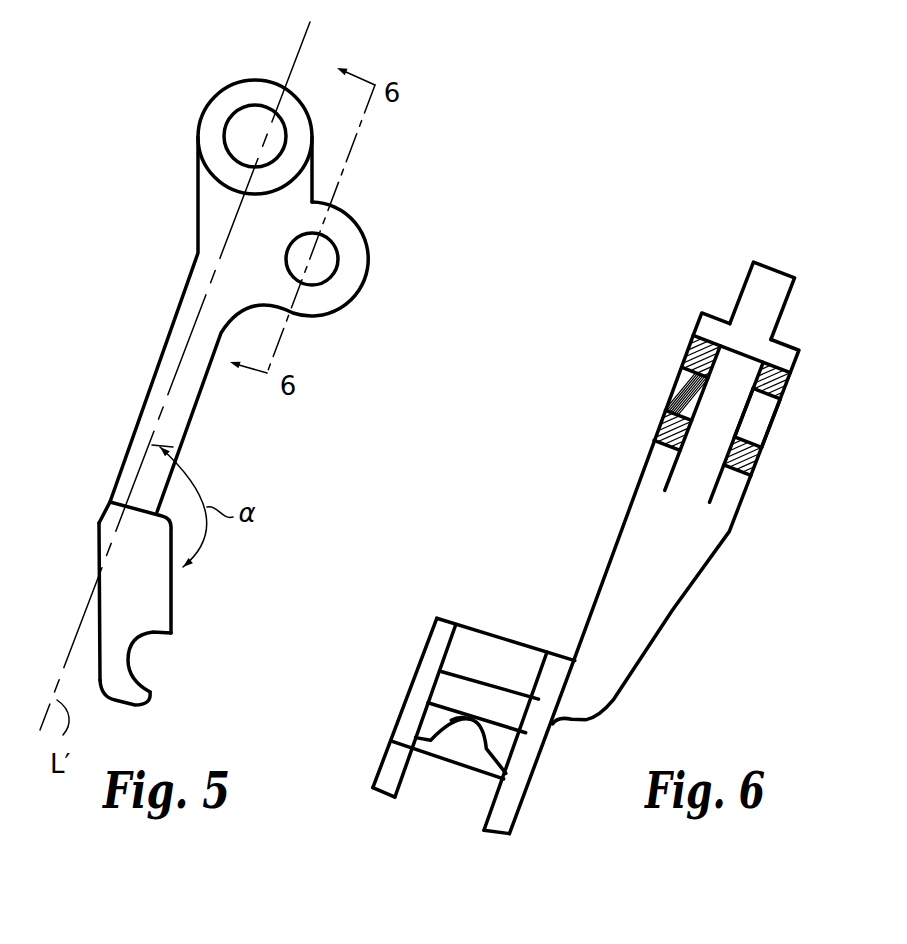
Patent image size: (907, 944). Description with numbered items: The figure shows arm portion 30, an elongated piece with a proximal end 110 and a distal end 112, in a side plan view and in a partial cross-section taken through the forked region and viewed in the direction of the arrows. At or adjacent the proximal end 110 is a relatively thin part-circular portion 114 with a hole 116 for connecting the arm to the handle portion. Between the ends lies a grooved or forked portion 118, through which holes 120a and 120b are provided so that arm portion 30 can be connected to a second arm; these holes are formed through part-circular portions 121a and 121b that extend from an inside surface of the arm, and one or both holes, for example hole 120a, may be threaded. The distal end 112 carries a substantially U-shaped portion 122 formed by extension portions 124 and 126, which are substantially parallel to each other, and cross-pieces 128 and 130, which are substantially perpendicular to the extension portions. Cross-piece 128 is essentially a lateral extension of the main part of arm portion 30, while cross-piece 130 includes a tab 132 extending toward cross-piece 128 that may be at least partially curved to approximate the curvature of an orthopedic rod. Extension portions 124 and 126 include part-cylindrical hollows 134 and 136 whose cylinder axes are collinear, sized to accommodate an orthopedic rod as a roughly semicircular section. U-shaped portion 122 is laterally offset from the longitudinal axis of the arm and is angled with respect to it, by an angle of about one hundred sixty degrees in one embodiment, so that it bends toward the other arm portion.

In FIG. 5, the arm portion 30 is at (246, 366).
In FIG. 6, the arm portion 30 is at (587, 547).
In FIG. 5, the proximal end 110 is at (221, 366).
In FIG. 5, the distal end 112 is at (114, 585).
In FIG. 6, the distal end 112 is at (457, 738).
In FIG. 5, the part-circular portion 114 is at (223, 107).
In FIG. 6, the part-circular portion 114 is at (767, 280).
In FIG. 5, the hole 116 is at (253, 133).
In FIG. 5, the forked portion 118 is at (357, 303).
In FIG. 6, the forked portion 118 is at (645, 383).
In FIG. 6, the hole 120a is at (678, 377).
In FIG. 6, the hole 120b is at (752, 424).
In FIG. 5, the part-circular portion 121a is at (353, 258).
In FIG. 6, the part-circular portion 121a is at (662, 427).
In FIG. 6, the part-circular portion 121b is at (782, 385).
In FIG. 6, the U-shaped portion 122 is at (390, 678).
In FIG. 5, the extension portion 124 is at (125, 575).
In FIG. 6, the extension portion 124 is at (413, 708).
In FIG. 6, the extension portion 126 is at (530, 745).
In FIG. 6, the cross-piece 128 is at (493, 662).
In FIG. 6, the cross-piece 130 is at (467, 752).
In FIG. 6, the tab 132 is at (460, 727).
In FIG. 5, the part-cylindrical hollow 134 is at (133, 650).
In FIG. 6, the part-cylindrical hollow 134 is at (388, 763).
In FIG. 6, the part-cylindrical hollow 136 is at (507, 803).